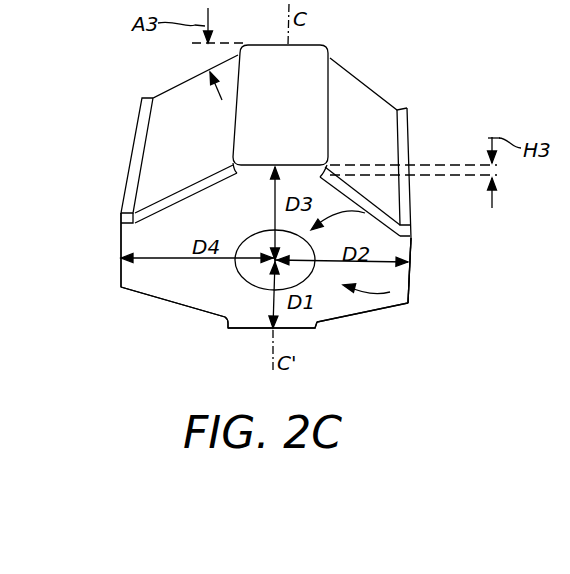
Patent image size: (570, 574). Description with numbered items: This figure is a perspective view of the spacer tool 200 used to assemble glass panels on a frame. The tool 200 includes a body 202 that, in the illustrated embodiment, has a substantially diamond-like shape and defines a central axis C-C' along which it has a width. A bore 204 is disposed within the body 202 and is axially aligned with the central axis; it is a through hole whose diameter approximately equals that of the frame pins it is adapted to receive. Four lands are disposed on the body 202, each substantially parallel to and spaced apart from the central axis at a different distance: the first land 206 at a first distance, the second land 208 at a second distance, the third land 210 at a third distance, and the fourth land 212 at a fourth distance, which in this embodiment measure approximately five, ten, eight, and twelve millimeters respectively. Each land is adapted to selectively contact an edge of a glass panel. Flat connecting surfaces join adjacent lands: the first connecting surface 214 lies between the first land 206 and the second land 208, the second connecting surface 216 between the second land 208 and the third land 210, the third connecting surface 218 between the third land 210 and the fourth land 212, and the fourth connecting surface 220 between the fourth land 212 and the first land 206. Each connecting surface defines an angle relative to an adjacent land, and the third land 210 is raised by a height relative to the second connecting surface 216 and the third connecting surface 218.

The spacer tool 200 is at (218, 165).
The body 202 is at (409, 287).
The bore 204 is at (410, 222).
The first land 206 is at (253, 328).
The second land 208 is at (411, 253).
The third land 210 is at (317, 62).
The fourth land 212 is at (121, 273).
The first connecting surface 214 is at (368, 307).
The second connecting surface 216 is at (362, 100).
The third connecting surface 218 is at (172, 152).
The fourth connecting surface 220 is at (173, 303).